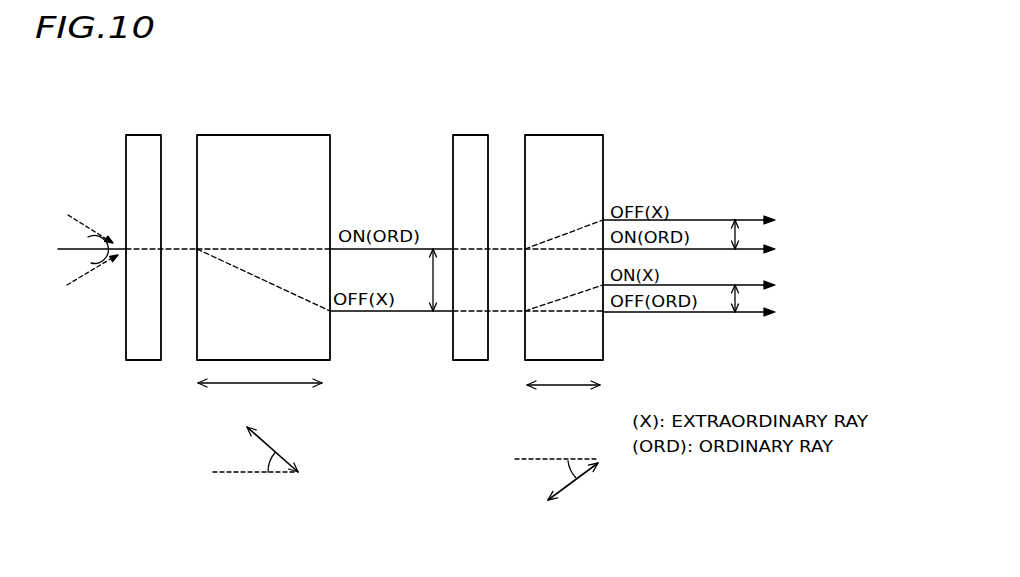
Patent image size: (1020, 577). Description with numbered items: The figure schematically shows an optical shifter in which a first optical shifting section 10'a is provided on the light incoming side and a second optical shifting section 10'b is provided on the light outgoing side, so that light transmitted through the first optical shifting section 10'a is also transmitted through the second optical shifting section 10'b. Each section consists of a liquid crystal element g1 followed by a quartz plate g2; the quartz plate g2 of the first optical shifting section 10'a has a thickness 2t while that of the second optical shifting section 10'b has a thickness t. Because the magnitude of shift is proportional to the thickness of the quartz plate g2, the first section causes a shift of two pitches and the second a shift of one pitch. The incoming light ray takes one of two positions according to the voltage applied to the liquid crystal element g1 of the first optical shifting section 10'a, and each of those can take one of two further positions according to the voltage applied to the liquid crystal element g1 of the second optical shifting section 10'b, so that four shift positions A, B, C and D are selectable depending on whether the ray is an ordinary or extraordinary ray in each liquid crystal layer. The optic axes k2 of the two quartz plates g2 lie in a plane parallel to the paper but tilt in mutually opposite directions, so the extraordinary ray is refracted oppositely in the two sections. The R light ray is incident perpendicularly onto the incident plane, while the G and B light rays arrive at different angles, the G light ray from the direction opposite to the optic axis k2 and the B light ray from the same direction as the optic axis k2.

The first optical shifting section 10'a is at (227, 197).
The second optical shifting section 10'b is at (525, 197).
The liquid crystal element g1 is at (472, 135).
The quartz plate g2 is at (587, 135).
The R light ray R is at (79, 249).
The G light ray G is at (82, 218).
The B light ray B is at (416, 278).
The shift position A is at (699, 313).
The shift position C is at (699, 250).
The shift position D is at (700, 219).
The optic axis k2 is at (265, 441).
The thickness t is at (563, 393).
The thickness 2t is at (260, 394).